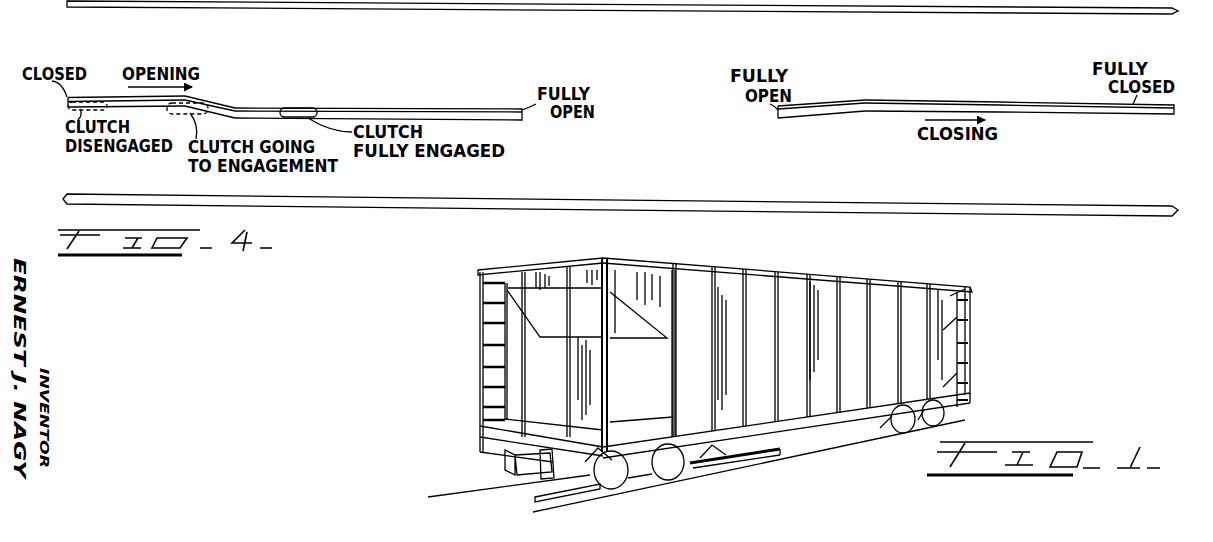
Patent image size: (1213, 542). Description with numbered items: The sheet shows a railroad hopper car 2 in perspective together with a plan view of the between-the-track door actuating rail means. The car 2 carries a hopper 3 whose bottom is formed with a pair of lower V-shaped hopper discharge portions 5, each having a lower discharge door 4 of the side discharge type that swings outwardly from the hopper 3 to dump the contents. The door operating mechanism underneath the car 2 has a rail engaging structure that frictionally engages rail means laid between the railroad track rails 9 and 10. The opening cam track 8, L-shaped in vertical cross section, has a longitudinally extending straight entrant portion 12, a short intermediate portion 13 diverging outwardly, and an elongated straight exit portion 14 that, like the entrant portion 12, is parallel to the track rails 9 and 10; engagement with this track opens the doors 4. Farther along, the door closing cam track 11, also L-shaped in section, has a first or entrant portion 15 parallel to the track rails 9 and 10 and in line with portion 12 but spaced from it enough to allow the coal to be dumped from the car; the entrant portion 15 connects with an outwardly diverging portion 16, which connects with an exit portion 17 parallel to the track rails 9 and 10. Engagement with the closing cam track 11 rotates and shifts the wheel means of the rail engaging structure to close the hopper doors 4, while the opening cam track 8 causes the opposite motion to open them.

In FIG. 1, the railroad hopper car 2 is at (725, 353).
In FIG. 1, the hopper 3 is at (820, 290).
In FIG. 1, the lower discharge doors 4 is at (843, 427).
In FIG. 1, the lower V-shaped hopper discharge portions 5 is at (750, 439).
In FIG. 4, the cam track 8 is at (295, 81).
In FIG. 1, the cam track 8 is at (598, 485).
In FIG. 4, the track rail 9 is at (673, 8).
In FIG. 4, the track rail 10 is at (672, 195).
In FIG. 4, the door closing cam track 11 is at (976, 78).
In FIG. 4, the straight entrant portion 12 is at (112, 97).
In FIG. 4, the short intermediate portion 13 is at (214, 100).
In FIG. 4, the straight exit portion 14 is at (368, 107).
In FIG. 4, the entrant portion 15 is at (815, 105).
In FIG. 4, the outwardly diverging portion 16 is at (875, 102).
In FIG. 4, the exit portion 17 is at (952, 101).